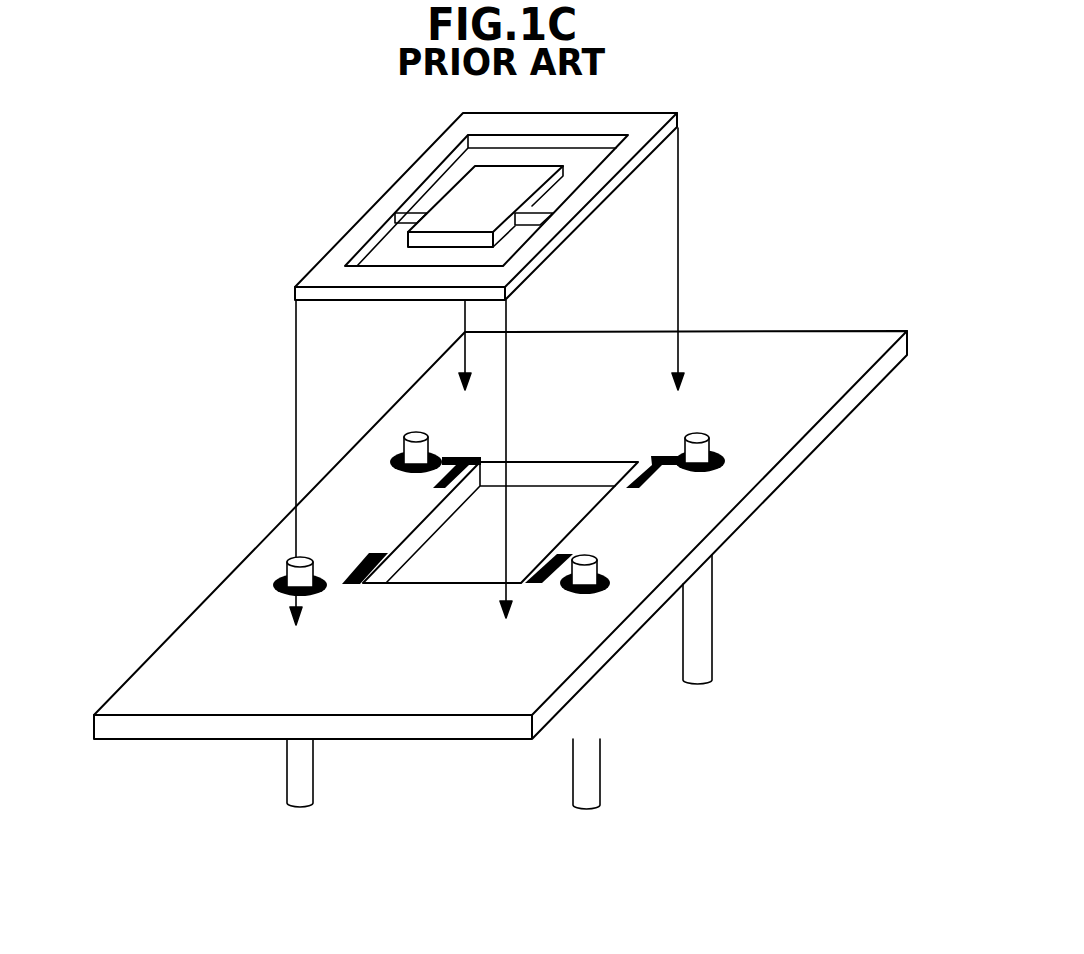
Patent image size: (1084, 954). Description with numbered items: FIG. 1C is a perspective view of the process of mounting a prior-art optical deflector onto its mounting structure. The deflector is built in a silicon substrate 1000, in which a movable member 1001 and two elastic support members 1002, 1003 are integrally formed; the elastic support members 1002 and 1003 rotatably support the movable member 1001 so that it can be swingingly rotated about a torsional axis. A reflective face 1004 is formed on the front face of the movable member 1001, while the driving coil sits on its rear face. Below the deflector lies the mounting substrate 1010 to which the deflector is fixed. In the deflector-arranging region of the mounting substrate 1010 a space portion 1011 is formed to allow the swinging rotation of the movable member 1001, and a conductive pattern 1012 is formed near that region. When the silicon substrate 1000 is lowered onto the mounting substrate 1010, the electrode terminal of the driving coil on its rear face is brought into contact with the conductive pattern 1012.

The silicon substrate 1000 is at (657, 93).
The movable member 1001 is at (411, 228).
The elastic support member 1002 is at (427, 203).
The elastic support member 1003 is at (542, 193).
The reflective face 1004 is at (479, 203).
The mounting substrate 1010 is at (820, 332).
The space portion 1011 is at (561, 473).
The conductive pattern 1012 is at (277, 576).